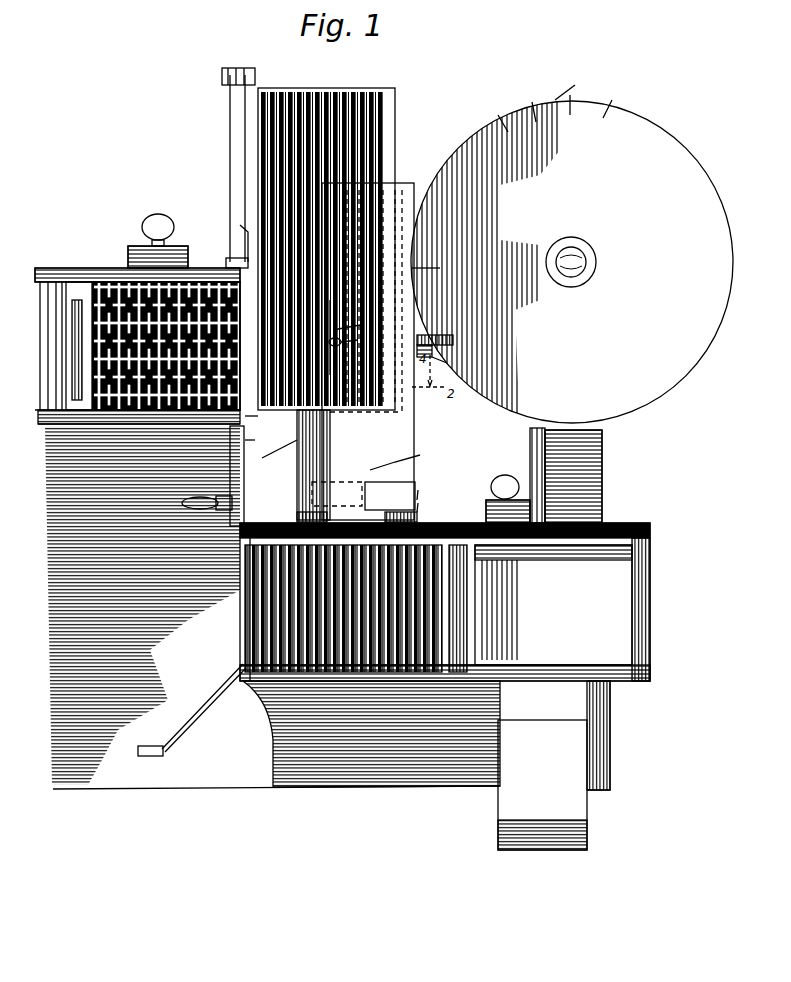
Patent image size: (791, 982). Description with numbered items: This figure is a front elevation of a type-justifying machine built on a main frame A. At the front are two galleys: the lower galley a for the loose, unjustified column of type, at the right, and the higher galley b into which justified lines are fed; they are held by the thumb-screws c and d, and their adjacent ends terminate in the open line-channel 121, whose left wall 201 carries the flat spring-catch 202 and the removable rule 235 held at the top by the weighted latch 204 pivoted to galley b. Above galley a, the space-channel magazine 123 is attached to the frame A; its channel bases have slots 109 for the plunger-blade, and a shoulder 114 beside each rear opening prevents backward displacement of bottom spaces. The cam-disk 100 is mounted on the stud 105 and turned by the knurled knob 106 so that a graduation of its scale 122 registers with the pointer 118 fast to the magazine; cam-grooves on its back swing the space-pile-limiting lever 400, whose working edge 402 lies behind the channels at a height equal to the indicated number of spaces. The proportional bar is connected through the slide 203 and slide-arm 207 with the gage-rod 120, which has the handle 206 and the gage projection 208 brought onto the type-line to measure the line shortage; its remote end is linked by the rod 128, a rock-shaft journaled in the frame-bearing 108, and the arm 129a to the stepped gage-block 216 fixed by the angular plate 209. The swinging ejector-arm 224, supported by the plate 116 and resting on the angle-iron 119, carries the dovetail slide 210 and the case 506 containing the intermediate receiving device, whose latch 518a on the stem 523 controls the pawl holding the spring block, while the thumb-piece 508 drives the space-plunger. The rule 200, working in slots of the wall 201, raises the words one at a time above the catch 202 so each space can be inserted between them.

The cam-disk 100 is at (712, 192).
The stud 105 is at (596, 250).
The knurled knob 106 is at (596, 264).
The frame-bearing 108 is at (488, 500).
The slots 109 is at (263, 443).
The shoulder 114 is at (263, 426).
The plate 116 is at (433, 484).
The pointer 118 is at (442, 268).
The angle-iron 119 is at (258, 512).
The gage-rod 120 is at (230, 131).
The line-channel 121 is at (275, 453).
The graduated scale 122 is at (573, 83).
The space-channel magazine 123 is at (395, 100).
The rod 128 is at (530, 437).
The arm 129a is at (437, 499).
The rule 200 is at (166, 736).
The left wall 201 is at (240, 666).
The spring-catch 202 is at (232, 428).
The slide 203 is at (262, 92).
The weighted latch 204 is at (228, 258).
The handle 206 is at (330, 495).
The slide-arm 207 is at (222, 78).
The gage projection 208 is at (235, 503).
The angular plate 209 is at (393, 505).
The dovetail slide 210 is at (312, 486).
The stepped gage-block 216 is at (418, 518).
The swinging ejector-arm 224 is at (407, 458).
The removable rule 235 is at (246, 248).
The space-pile-limiting gage or lever 400 is at (432, 351).
The working edge 402 is at (447, 364).
The case 506 is at (368, 351).
The thumb-piece 508 is at (453, 342).
The latch 518a is at (342, 343).
The stem 523 is at (340, 333).
The galley for the unjustified column of type a is at (445, 602).
The galley for the justified column b is at (78, 268).
The thumb-screw c is at (158, 214).
The thumb-screw d is at (506, 475).
The main frame A is at (606, 750).